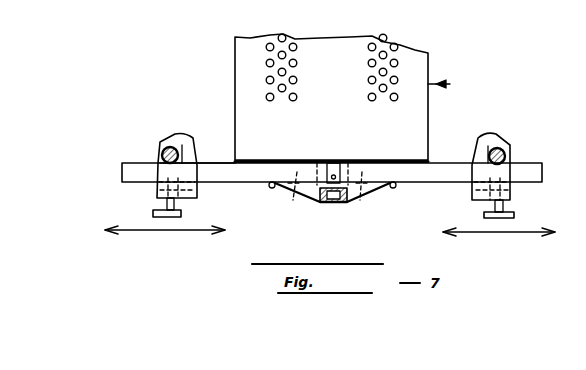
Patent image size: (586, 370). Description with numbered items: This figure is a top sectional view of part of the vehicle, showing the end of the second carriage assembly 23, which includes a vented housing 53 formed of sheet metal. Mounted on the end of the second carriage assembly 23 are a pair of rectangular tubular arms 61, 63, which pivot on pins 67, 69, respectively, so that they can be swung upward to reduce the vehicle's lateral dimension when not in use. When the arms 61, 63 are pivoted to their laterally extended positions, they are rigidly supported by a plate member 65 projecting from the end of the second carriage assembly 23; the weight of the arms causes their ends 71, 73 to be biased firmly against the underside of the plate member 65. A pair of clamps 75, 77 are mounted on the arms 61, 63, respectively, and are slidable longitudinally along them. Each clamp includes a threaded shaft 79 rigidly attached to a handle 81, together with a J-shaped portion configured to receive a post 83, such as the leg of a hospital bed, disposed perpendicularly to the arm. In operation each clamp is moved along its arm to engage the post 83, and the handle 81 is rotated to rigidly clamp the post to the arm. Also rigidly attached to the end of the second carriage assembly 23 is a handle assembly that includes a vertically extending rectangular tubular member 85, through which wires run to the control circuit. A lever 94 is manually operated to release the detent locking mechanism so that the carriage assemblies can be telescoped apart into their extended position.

The second carriage assembly 23 is at (450, 84).
The vented housing 53 is at (418, 112).
The rectangular tubular arm 61 is at (450, 172).
The rectangular tubular arm 63 is at (205, 169).
The plate member 65 is at (374, 192).
The pin 67 is at (394, 188).
The pin 69 is at (271, 188).
The arm end 71 is at (360, 202).
The arm end 73 is at (294, 202).
The clamp 75 is at (472, 190).
The clamp 77 is at (157, 189).
The threaded shaft 79 is at (504, 205).
The handle 81 is at (514, 215).
The post 83 is at (506, 158).
The vertically extending rectangular tubular member 85 is at (333, 203).
The lever 94 is at (334, 163).